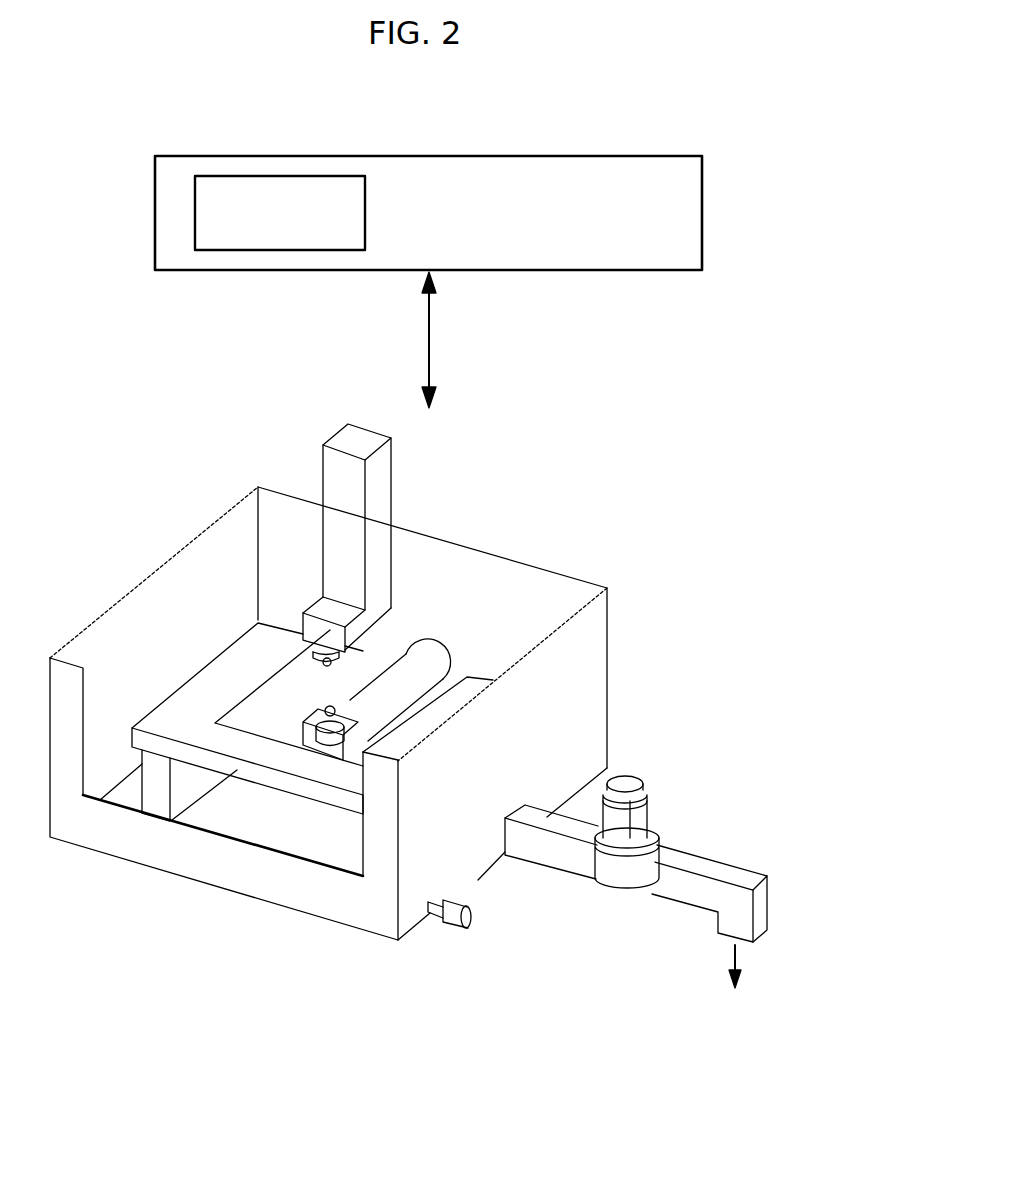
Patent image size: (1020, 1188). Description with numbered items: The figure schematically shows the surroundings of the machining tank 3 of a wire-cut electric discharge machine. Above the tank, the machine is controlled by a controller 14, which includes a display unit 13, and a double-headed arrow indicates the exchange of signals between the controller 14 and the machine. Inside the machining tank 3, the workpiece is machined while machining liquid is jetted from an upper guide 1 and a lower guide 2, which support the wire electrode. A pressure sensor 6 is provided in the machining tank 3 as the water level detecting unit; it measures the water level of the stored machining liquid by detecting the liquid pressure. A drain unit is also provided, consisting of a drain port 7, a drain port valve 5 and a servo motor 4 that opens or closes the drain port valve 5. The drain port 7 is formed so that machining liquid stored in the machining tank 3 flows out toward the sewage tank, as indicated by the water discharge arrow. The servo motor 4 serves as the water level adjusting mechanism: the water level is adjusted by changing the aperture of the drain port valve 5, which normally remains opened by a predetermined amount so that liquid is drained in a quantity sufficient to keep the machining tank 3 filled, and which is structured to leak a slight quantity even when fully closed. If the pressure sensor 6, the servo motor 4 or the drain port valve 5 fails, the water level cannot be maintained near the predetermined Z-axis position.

The upper guide 1 is at (392, 539).
The lower guide 2 is at (446, 658).
The machining tank 3 is at (600, 702).
The servo motor 4 is at (660, 806).
The drain port valve 5 is at (640, 863).
The pressure sensor 6 is at (484, 933).
The drain port 7 is at (712, 951).
The display unit 13 is at (195, 210).
The controller 14 is at (702, 213).